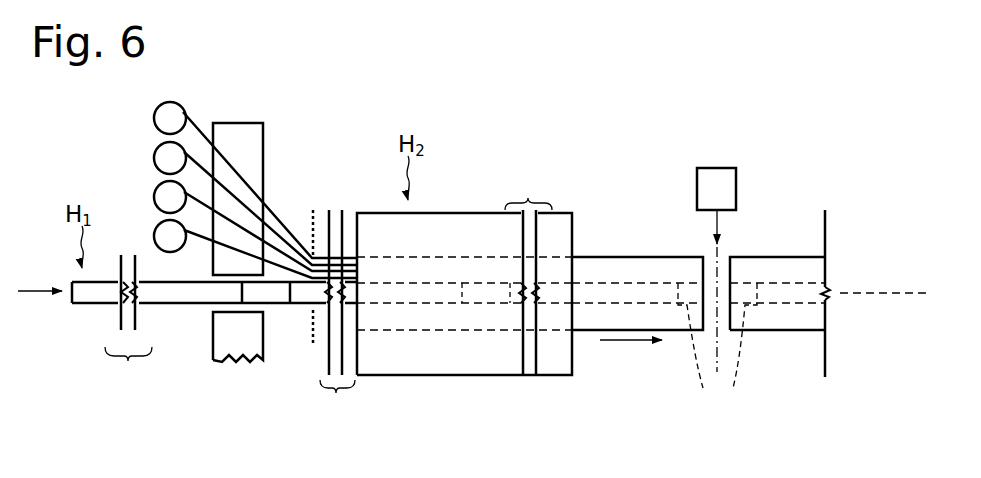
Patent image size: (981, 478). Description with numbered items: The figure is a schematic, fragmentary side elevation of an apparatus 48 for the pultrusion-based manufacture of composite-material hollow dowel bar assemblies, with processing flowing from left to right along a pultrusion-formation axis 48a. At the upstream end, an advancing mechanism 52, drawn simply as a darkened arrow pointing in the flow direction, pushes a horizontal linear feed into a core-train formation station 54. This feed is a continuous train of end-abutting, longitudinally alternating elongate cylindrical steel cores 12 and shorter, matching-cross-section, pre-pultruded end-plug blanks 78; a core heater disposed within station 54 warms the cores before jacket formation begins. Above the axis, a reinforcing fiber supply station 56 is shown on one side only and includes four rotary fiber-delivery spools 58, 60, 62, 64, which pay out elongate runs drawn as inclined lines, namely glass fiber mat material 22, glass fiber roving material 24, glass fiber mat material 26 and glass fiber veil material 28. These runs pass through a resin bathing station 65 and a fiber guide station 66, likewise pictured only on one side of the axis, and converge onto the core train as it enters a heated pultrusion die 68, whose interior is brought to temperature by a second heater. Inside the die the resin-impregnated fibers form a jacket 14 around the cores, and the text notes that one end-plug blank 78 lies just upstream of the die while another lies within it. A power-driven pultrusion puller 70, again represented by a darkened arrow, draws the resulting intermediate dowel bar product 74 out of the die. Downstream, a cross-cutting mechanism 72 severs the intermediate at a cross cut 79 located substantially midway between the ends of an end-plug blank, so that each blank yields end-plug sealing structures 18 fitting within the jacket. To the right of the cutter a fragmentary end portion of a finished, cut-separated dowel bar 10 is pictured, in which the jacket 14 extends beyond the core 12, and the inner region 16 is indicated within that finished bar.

The dowel bar 10 is at (830, 268).
The core 12 is at (770, 280).
The jacket 14 is at (830, 318).
The inner region 16 is at (813, 318).
The sealing structure 18 is at (717, 343).
The glass fiber mat material 22 is at (200, 238).
The glass fiber roving material 24 is at (203, 203).
The glass fiber mat material 26 is at (204, 166).
The glass fiber veil material 28 is at (204, 132).
The apparatus 48 is at (532, 135).
The pultrusion-formation axis 48a is at (866, 284).
The advancing mechanism 52 is at (25, 290).
The core-train formation station 54 is at (88, 308).
The reinforcing fiber supply station 56 is at (194, 100).
The rotary fiber-delivery spool 58 is at (154, 236).
The rotary fiber-delivery spool 60 is at (154, 197).
The rotary fiber-delivery spool 62 is at (154, 158).
The rotary fiber-delivery spool 64 is at (154, 118).
The resin bathing station 65 is at (268, 124).
The fiber guide station 66 is at (158, 308).
The pultrusion die 68 is at (528, 199).
The pultrusion puller 70 is at (632, 345).
The cross-cutting mechanism 72 is at (732, 166).
The intermediate dowel bar product 74 is at (600, 257).
The end-plug blank 78 is at (485, 295).
The cross cut 79 is at (727, 252).